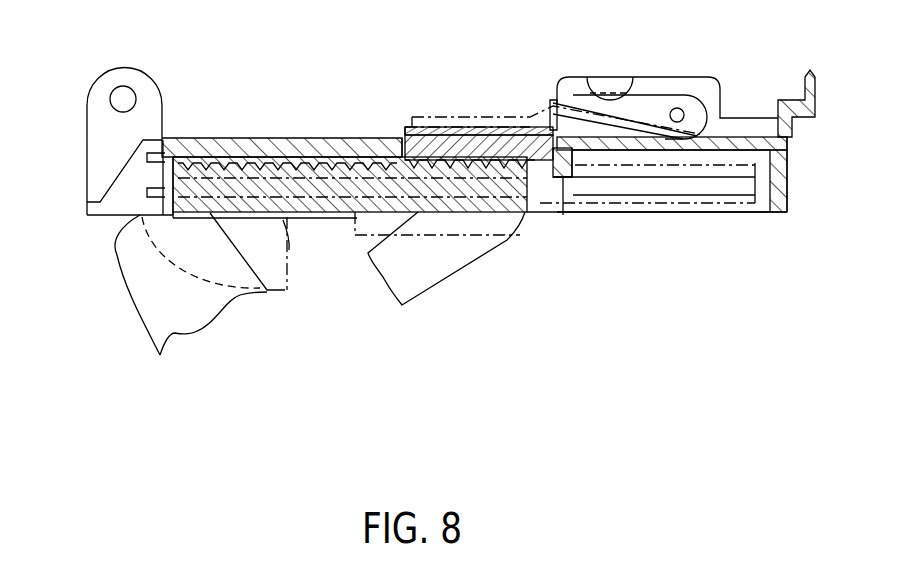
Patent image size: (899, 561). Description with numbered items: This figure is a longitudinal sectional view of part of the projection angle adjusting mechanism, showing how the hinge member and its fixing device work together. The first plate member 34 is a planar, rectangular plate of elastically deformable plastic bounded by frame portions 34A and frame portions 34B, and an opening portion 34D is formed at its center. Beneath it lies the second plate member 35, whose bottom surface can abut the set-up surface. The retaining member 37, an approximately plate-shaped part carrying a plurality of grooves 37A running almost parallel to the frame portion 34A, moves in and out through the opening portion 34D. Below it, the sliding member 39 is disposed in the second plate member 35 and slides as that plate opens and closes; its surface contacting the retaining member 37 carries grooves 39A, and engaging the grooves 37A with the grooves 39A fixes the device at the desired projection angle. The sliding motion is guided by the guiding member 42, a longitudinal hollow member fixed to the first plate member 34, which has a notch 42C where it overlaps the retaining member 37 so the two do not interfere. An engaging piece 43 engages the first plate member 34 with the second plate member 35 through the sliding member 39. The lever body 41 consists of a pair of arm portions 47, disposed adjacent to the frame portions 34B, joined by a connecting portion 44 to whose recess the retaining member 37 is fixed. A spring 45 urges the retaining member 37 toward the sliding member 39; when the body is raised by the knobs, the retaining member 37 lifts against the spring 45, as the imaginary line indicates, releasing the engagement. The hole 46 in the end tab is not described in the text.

The first plate member 34 is at (740, 140).
The frame portion 34A is at (150, 195).
The frame portion 34B is at (762, 203).
The opening portion 34D is at (405, 150).
The second plate member 35 is at (153, 318).
The retaining member 37 is at (437, 145).
The grooves 37A is at (455, 170).
The sliding member 39 is at (322, 210).
The grooves 39A is at (274, 162).
The lever body 41 is at (838, 101).
The guiding member 42 is at (653, 187).
The notch 42C is at (563, 178).
The engaging piece 43 is at (402, 288).
The connecting portion 44 is at (483, 140).
The spring 45 is at (657, 100).
The mounting hole 46 is at (117, 92).
The arm portions 47 is at (803, 112).